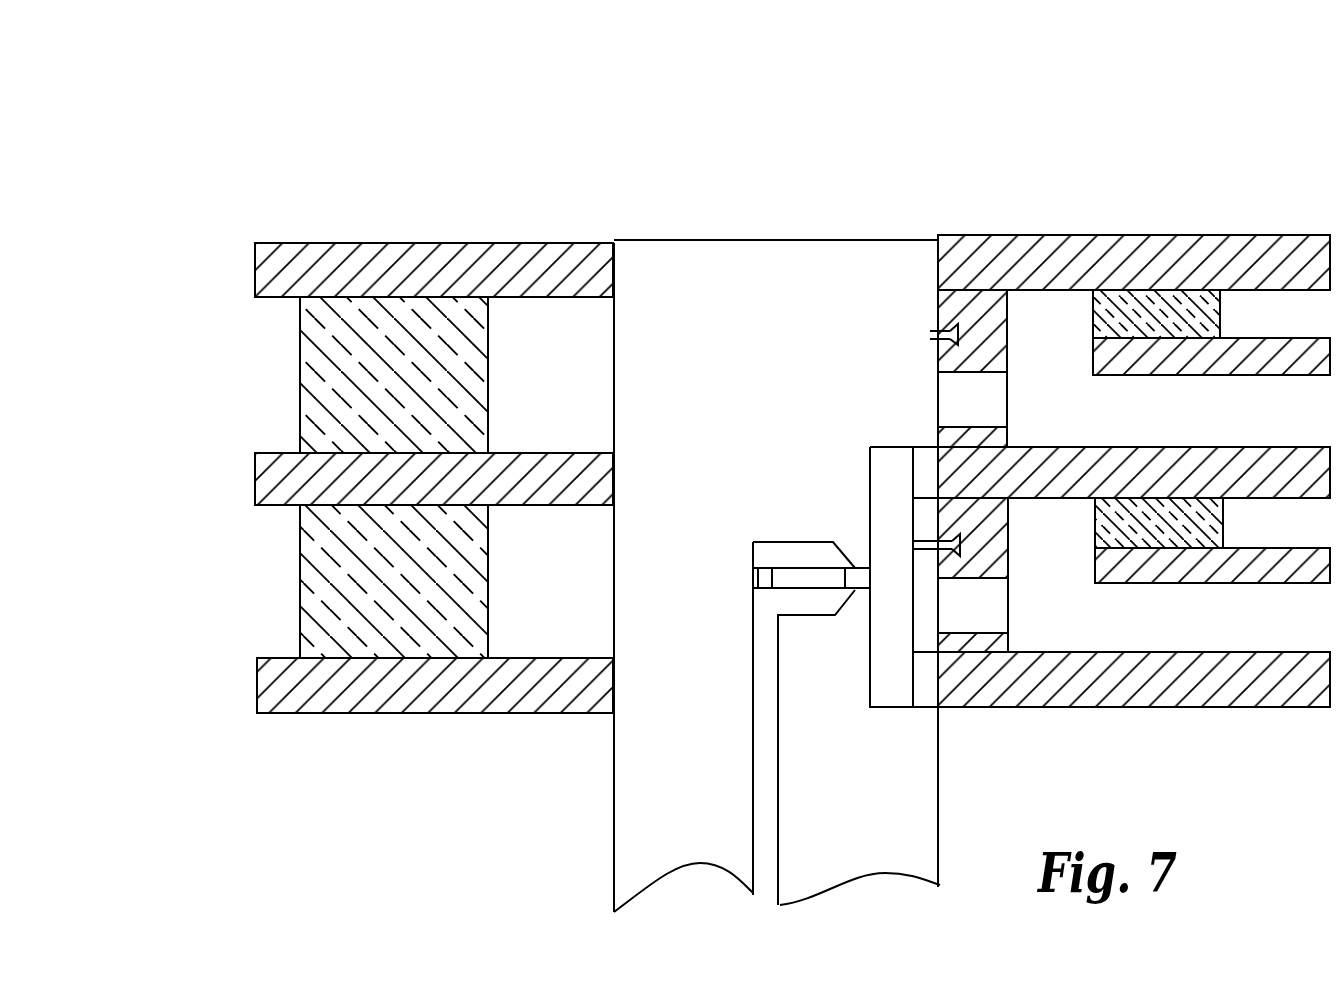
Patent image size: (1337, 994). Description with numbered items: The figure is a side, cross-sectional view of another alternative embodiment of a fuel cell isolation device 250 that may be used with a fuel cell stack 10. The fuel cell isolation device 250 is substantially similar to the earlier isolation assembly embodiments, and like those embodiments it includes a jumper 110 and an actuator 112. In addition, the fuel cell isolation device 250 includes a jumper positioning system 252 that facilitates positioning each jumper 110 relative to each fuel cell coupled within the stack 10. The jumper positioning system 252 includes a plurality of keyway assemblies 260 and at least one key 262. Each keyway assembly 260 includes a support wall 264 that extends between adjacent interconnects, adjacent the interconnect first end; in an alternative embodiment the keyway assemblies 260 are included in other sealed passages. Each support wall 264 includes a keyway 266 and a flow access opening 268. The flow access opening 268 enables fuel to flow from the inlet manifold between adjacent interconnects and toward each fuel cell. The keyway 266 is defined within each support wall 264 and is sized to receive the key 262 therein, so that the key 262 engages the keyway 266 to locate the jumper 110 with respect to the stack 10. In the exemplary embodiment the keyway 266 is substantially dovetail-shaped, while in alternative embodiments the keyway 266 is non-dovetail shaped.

The fuel cell stack 10 is at (1222, 115).
The jumper 110 is at (870, 502).
The actuator 112 is at (753, 740).
The fuel cell isolation device 250 is at (207, 352).
The jumper positioning system 252 is at (957, 727).
The keyway assembly 260 is at (1007, 328).
The key 262 is at (928, 540).
The support wall 264 is at (1010, 434).
The keyway 266 is at (940, 333).
The flow access opening 268 is at (1010, 645).